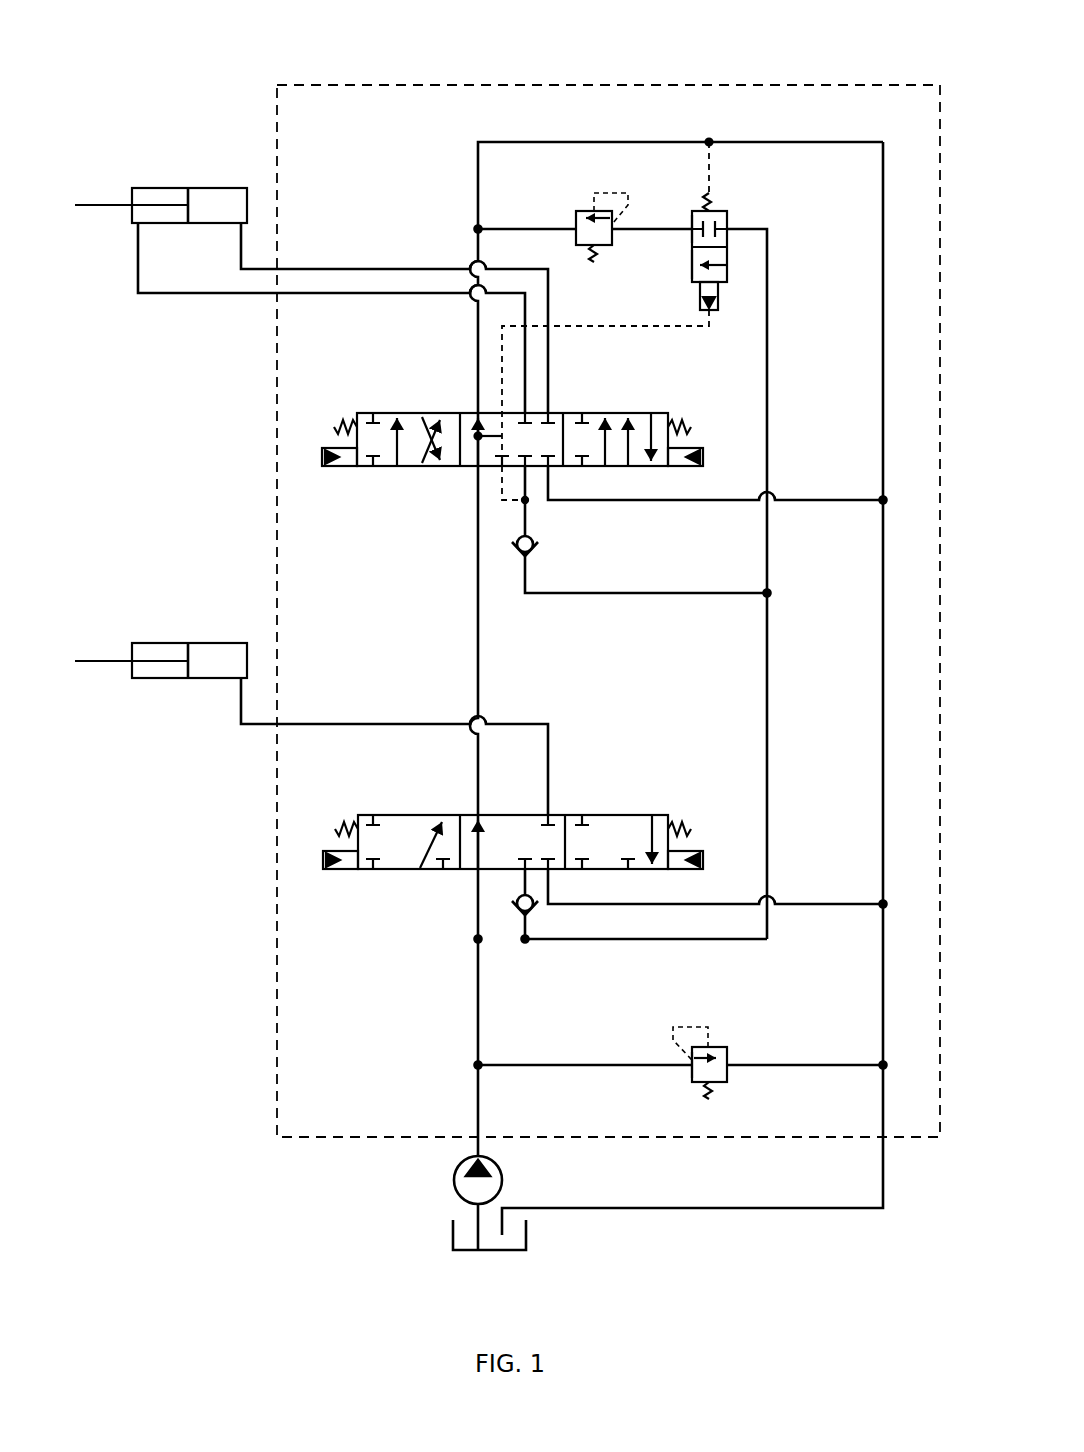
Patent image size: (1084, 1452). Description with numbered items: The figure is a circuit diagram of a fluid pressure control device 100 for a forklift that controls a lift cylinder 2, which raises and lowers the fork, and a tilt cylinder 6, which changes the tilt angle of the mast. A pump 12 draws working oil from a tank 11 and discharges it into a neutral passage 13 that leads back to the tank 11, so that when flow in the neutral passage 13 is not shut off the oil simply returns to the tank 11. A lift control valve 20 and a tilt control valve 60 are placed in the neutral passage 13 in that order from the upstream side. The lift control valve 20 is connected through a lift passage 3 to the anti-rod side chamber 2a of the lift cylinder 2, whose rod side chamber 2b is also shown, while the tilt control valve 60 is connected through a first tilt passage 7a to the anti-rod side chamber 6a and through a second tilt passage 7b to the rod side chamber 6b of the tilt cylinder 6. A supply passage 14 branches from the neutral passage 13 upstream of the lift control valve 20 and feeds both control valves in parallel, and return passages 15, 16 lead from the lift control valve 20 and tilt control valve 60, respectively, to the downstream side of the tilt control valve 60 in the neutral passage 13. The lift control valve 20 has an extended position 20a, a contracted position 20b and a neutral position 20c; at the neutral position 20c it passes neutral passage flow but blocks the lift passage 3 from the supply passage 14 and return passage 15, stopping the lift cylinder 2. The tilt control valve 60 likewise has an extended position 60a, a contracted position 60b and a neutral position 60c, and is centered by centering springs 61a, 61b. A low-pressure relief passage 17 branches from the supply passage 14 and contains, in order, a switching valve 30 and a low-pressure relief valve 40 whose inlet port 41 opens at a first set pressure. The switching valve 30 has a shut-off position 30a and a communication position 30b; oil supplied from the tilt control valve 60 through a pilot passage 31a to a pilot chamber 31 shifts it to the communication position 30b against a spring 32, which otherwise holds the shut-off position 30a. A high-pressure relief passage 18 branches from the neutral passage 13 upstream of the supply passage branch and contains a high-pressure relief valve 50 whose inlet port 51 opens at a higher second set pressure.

The fluid pressure control device 100 is at (330, 83).
The lift cylinder 2 is at (134, 641).
The anti-rod side chamber 2a is at (218, 653).
The rod-side chamber 2b is at (158, 653).
The lift passage 3 is at (240, 722).
The tilt cylinder 6 is at (134, 186).
The anti-rod side chamber 6a is at (218, 198).
The rod side chamber 6b is at (158, 198).
The first tilt passage 7a is at (240, 268).
The second tilt passage 7b is at (137, 266).
The tank 11 is at (453, 1239).
The pump 12 is at (454, 1181).
The neutral passage 13 is at (477, 159).
The supply passage 14 is at (592, 595).
The return passage 15 is at (825, 907).
The return passage 16 is at (825, 503).
The low-pressure relief passage 17 is at (532, 228).
The high-pressure relief passage 18 is at (593, 1067).
The lift control valve 20 is at (358, 871).
The extended position 20a is at (455, 814).
The contracted position 20b is at (663, 814).
The neutral position 20c is at (560, 814).
The switching valve 30 is at (725, 208).
The shut-off position 30a is at (690, 221).
The communication position 30b is at (692, 277).
The pilot chamber 31 is at (719, 293).
The pilot passage 31a is at (618, 328).
The spring 32 is at (703, 203).
The low-pressure relief valve 40 is at (579, 208).
The inlet port 41 is at (614, 226).
The high-pressure relief valve 50 is at (727, 1084).
The inlet port 51 is at (691, 1061).
The tilt control valve 60 is at (358, 468).
The extended position 60a is at (455, 412).
The contracted position 60b is at (663, 412).
The neutral position 60c is at (560, 412).
The centering spring 61a is at (340, 430).
The centering spring 61b is at (688, 424).